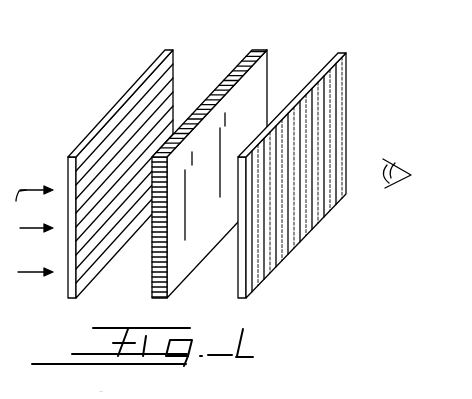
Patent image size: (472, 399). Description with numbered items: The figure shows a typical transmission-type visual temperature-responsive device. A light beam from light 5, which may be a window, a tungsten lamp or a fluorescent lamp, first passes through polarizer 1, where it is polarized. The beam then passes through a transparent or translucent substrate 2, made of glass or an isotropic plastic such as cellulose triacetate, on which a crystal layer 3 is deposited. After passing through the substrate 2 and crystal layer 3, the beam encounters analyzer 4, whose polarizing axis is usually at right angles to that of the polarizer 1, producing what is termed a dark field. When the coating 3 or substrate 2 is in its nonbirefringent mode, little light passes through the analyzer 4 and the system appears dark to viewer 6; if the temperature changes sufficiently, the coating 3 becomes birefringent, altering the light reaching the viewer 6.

The polarizer 1 is at (174, 51).
The transparent or translucent substrate 2 is at (253, 51).
The crystal layer 3 is at (269, 51).
The analyzer 4 is at (344, 52).
The light 5 is at (18, 272).
The viewer 6 is at (389, 161).